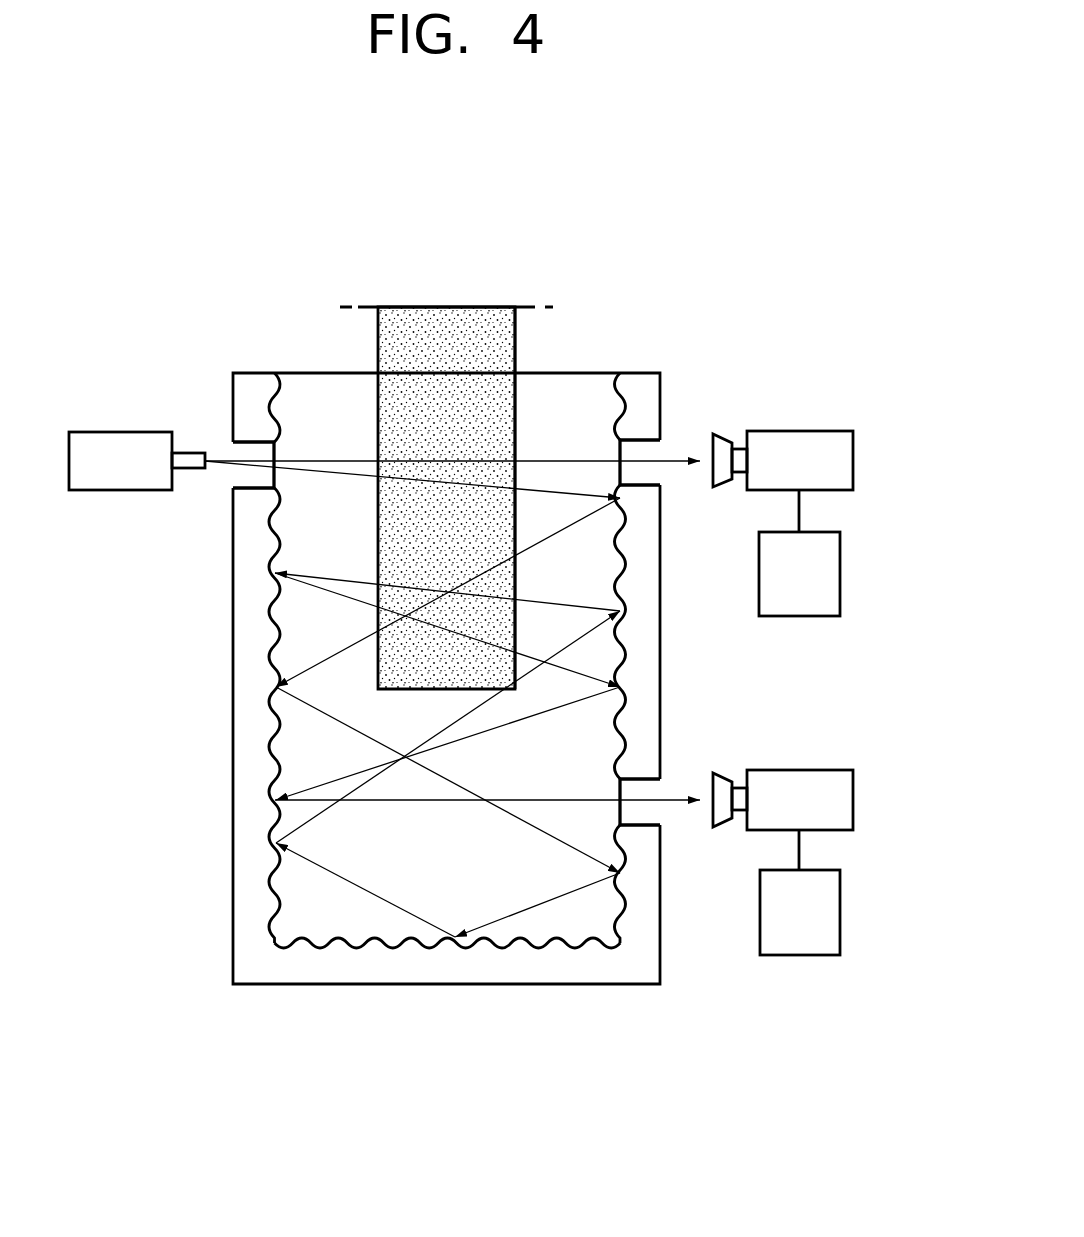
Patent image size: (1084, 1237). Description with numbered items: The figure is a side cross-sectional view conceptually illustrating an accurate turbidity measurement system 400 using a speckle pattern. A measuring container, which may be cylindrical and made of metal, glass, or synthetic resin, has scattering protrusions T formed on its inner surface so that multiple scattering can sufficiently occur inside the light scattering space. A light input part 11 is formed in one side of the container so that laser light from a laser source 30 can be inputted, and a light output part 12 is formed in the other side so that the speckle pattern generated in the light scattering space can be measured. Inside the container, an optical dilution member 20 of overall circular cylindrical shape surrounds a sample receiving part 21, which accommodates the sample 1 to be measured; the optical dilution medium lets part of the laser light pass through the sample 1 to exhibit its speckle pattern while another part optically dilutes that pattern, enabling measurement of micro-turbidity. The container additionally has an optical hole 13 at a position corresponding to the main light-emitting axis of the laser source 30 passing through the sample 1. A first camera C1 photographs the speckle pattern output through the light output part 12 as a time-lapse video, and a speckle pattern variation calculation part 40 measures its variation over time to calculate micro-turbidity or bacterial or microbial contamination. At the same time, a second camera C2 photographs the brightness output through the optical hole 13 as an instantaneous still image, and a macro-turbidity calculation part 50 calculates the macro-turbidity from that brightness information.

The accurate turbidity measurement system 400 is at (157, 279).
The sample 1 is at (438, 333).
The sample receiving part 21 is at (513, 423).
The scattering protrusions T is at (621, 440).
The light input part 11 is at (250, 446).
The light output part 12 is at (641, 786).
The optical hole 13 is at (655, 446).
The optical dilution member 20 is at (422, 874).
The laser source 30 is at (98, 492).
The first camera C1 is at (853, 800).
The second camera C2 is at (853, 460).
The speckle pattern variation calculation part 40 is at (840, 913).
The macro-turbidity calculation part 50 is at (840, 573).